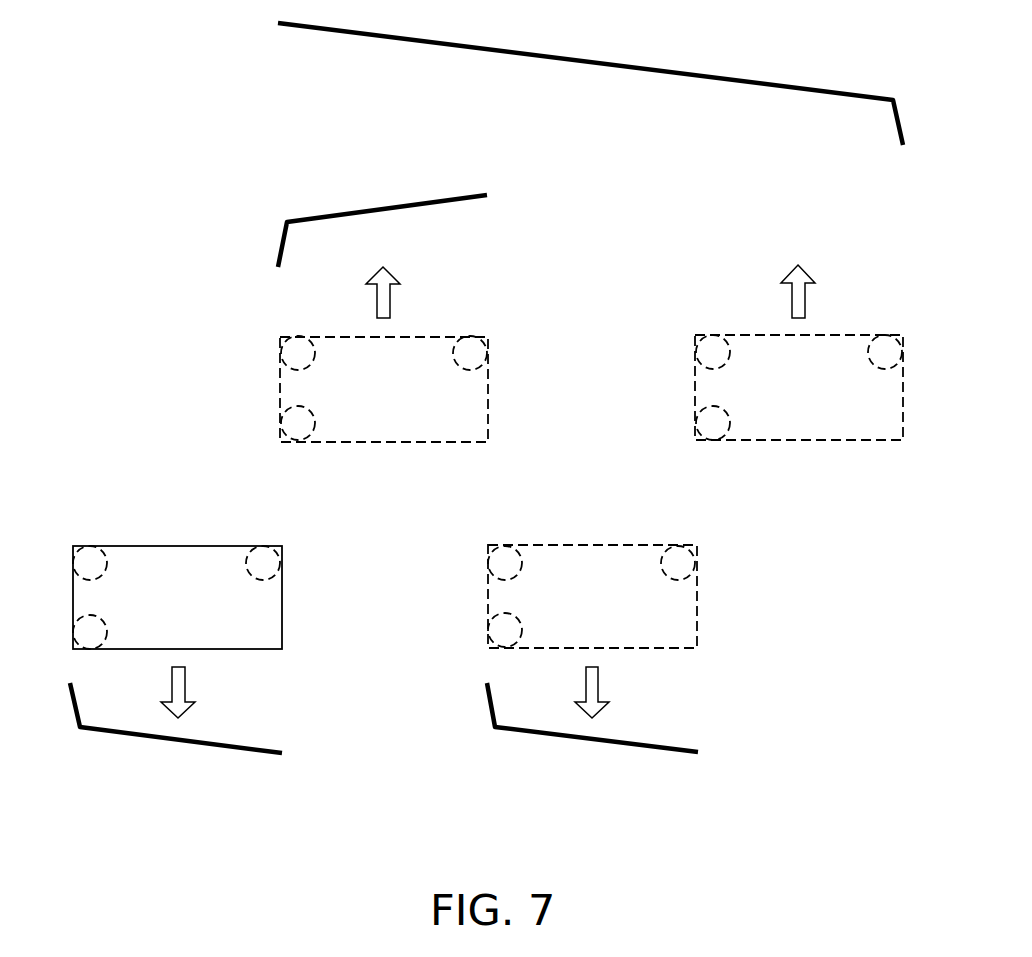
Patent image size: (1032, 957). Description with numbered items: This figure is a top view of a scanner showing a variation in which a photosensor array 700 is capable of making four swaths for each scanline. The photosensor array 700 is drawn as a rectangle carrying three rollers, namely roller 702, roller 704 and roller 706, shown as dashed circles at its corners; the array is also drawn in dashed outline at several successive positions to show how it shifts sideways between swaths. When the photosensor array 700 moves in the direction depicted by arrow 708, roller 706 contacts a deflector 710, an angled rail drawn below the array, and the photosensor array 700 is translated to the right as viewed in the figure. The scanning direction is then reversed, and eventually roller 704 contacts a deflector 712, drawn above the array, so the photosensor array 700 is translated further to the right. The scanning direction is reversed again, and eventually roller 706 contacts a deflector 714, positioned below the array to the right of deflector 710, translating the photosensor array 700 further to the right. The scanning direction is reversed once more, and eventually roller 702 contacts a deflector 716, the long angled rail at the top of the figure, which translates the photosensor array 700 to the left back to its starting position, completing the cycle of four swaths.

The photosensor array 700 is at (177, 543).
The roller 702 is at (263, 543).
The roller 704 is at (90, 545).
The roller 706 is at (90, 650).
The arrow 708 is at (185, 690).
The deflector 710 is at (180, 742).
The deflector 712 is at (385, 207).
The deflector 714 is at (595, 742).
The deflector 716 is at (697, 73).